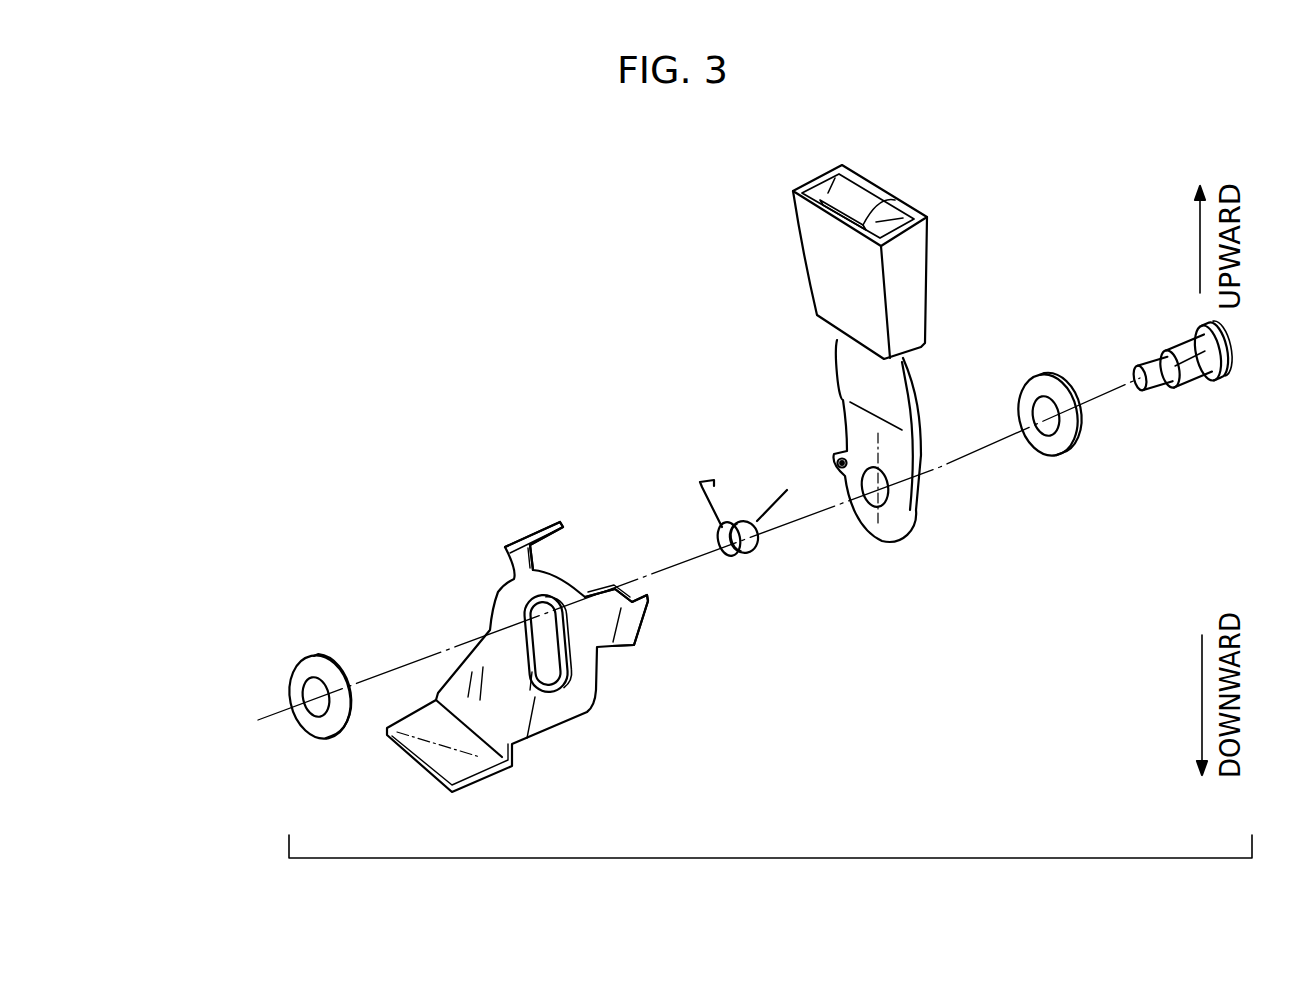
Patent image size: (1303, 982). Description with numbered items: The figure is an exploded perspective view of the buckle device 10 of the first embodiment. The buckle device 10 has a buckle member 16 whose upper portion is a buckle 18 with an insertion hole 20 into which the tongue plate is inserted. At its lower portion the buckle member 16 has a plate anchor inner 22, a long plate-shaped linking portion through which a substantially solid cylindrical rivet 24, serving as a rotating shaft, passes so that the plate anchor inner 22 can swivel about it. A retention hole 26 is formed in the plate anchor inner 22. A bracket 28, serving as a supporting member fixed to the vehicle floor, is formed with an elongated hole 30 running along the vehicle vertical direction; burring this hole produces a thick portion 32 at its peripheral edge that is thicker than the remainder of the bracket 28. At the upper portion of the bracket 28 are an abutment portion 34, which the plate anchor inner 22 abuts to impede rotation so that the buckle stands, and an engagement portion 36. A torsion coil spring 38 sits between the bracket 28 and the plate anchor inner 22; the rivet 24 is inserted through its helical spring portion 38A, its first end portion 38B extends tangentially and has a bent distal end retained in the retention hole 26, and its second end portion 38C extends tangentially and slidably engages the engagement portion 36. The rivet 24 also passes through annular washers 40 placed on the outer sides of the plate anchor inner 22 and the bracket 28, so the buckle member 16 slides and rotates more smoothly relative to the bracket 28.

The buckle device 10 is at (626, 284).
The buckle member 16 is at (932, 219).
The buckle 18 is at (930, 285).
The insertion hole 20 is at (862, 215).
The plate anchor inner 22 is at (917, 380).
The rivet 24 is at (1236, 352).
The retention hole 26 is at (835, 468).
The bracket 28 is at (494, 596).
The elongated hole 30 is at (552, 643).
The thick portion 32 is at (560, 687).
The abutment portion 34 is at (545, 528).
The engagement portion 36 is at (648, 610).
The torsion coil spring 38 is at (743, 485).
The spring portion 38A is at (748, 555).
The first end portion 38B is at (700, 483).
The second end portion 38C is at (786, 498).
The washers 40 is at (335, 662).